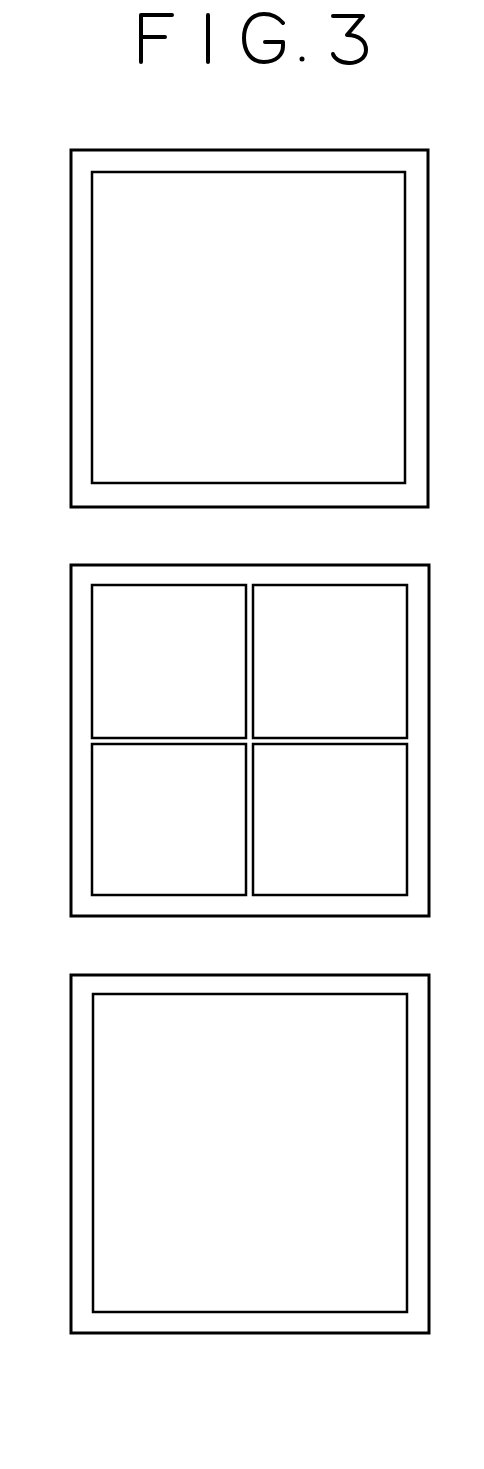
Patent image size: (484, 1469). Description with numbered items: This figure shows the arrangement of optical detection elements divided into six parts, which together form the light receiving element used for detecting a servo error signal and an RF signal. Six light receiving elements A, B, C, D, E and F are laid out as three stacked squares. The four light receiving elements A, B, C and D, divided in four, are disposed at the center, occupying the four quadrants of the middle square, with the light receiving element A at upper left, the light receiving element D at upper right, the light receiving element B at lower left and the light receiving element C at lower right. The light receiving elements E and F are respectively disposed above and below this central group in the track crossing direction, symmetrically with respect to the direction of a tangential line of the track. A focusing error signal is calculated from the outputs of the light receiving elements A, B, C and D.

The light receiving element E is at (248, 327).
The light receiving element A is at (169, 661).
The light receiving element D is at (330, 661).
The light receiving element B is at (169, 819).
The light receiving element C is at (330, 819).
The light receiving element F is at (250, 1153).